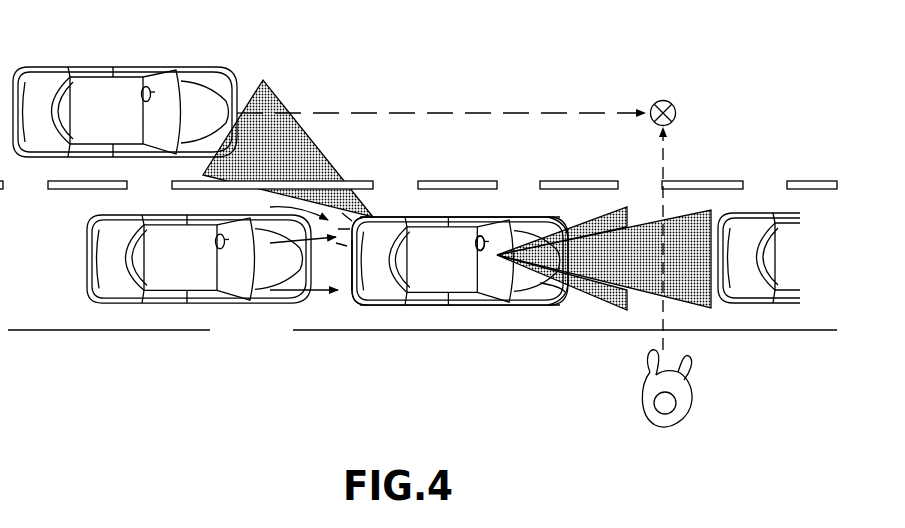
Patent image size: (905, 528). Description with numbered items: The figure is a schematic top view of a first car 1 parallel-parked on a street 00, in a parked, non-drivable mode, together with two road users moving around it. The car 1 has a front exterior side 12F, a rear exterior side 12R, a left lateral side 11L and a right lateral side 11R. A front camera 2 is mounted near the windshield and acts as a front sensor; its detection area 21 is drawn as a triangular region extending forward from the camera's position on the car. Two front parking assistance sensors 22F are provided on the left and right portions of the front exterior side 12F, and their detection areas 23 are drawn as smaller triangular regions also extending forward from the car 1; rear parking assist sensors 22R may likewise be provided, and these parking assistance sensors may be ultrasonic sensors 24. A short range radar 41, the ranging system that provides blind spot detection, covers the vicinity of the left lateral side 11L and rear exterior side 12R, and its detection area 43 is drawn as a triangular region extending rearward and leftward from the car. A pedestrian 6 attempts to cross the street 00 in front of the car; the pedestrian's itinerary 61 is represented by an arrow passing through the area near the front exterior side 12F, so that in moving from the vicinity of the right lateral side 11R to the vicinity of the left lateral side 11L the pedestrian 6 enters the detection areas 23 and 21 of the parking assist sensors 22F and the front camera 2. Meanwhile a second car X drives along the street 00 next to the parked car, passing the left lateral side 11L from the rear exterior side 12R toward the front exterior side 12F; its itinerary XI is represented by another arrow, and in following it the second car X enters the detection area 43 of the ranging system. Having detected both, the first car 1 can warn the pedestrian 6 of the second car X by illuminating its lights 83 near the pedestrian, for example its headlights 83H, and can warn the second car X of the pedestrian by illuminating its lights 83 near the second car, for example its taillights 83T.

The street 00 is at (50, 332).
The second car X is at (92, 102).
The itinerary of the second car XI is at (398, 113).
The car 1 is at (400, 247).
The front camera 2 is at (490, 254).
The pedestrian 6 is at (665, 412).
The left lateral side 11L is at (435, 217).
The right lateral side 11R is at (423, 304).
The front exterior side 12F is at (566, 214).
The rear exterior side 12R is at (357, 296).
The detection area of the front camera 21 is at (702, 306).
The front parking assistance sensors 22F is at (562, 292).
The rear parking assist sensors 22R is at (350, 252).
The detection areas of the front parking assistance sensors 23 is at (625, 208).
The ultrasonic sensors 24 is at (389, 305).
The short range radar 41 is at (348, 253).
The detection area of the ranging system 43 is at (322, 156).
The itinerary of the pedestrian 61 is at (667, 155).
The lights 83 is at (387, 296).
The taillights 83T is at (323, 343).
The headlights 83H is at (567, 309).